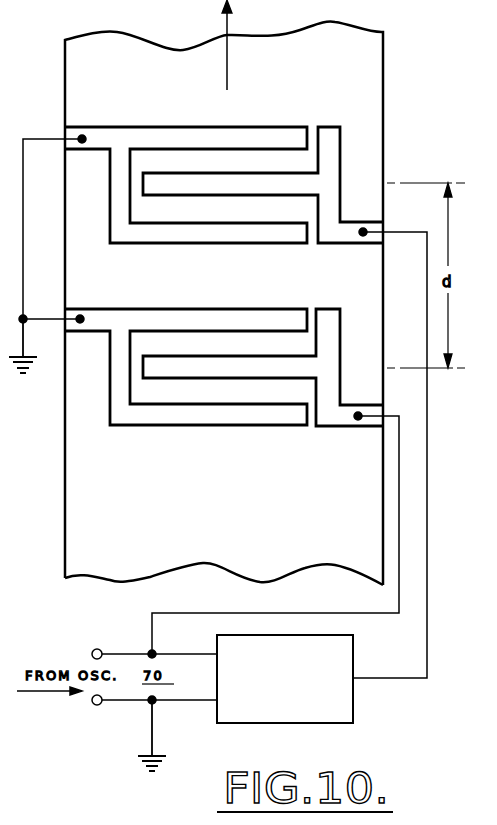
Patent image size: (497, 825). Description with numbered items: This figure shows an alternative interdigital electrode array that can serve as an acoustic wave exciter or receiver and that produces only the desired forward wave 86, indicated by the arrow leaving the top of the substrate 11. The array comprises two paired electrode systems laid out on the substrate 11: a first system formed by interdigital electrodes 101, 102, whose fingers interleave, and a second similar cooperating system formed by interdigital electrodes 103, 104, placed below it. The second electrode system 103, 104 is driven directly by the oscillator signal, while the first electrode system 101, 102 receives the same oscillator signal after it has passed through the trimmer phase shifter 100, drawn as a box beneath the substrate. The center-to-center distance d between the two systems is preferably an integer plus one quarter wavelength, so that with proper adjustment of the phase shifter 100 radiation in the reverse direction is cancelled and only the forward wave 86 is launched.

The substrate 11 is at (80, 487).
The forward wave 86 is at (228, 65).
The trimmer phase shifter 100 is at (354, 657).
The interdigital electrode 101 is at (170, 127).
The interdigital electrode 102 is at (340, 138).
The interdigital electrode 103 is at (212, 309).
The interdigital electrode 104 is at (330, 313).